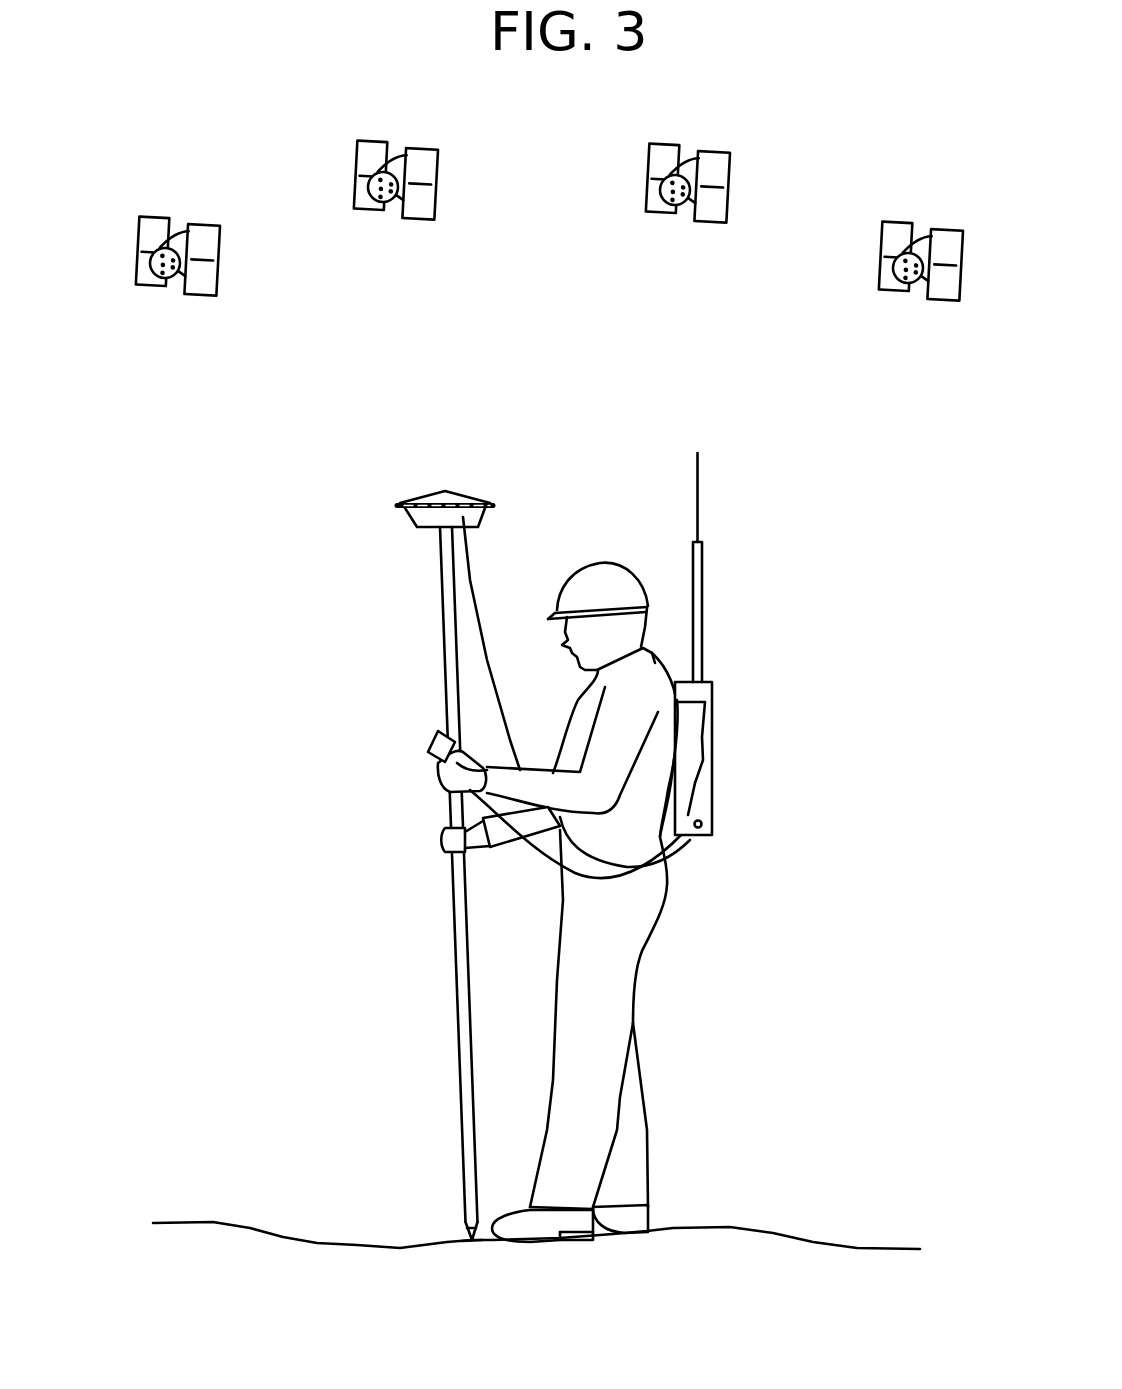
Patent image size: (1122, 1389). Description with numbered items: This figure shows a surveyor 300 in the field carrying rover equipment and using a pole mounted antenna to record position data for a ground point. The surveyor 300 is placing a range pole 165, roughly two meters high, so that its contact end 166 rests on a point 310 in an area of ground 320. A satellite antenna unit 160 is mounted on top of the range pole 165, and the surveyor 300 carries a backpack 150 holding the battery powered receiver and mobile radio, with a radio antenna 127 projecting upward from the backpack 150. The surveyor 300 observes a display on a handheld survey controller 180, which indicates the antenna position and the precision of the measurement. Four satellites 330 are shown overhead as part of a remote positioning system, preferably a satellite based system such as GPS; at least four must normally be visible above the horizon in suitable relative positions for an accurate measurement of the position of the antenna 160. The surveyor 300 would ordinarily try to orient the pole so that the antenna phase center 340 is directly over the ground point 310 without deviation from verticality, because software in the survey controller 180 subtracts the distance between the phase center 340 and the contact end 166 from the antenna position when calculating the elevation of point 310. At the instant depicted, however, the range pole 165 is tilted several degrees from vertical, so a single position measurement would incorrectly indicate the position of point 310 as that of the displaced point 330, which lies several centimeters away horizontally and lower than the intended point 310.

The satellites 330 is at (155, 218).
The antenna phase center 340 is at (410, 476).
The satellite antenna unit 160 is at (378, 445).
The range pole 165 is at (416, 883).
The contact end 166 is at (446, 1232).
The survey controller 180 is at (432, 748).
The surveyor 300 is at (652, 677).
The backpack 150 is at (712, 728).
The antenna 127 is at (701, 497).
The ground 320 is at (322, 1242).
The point 310 is at (472, 1256).